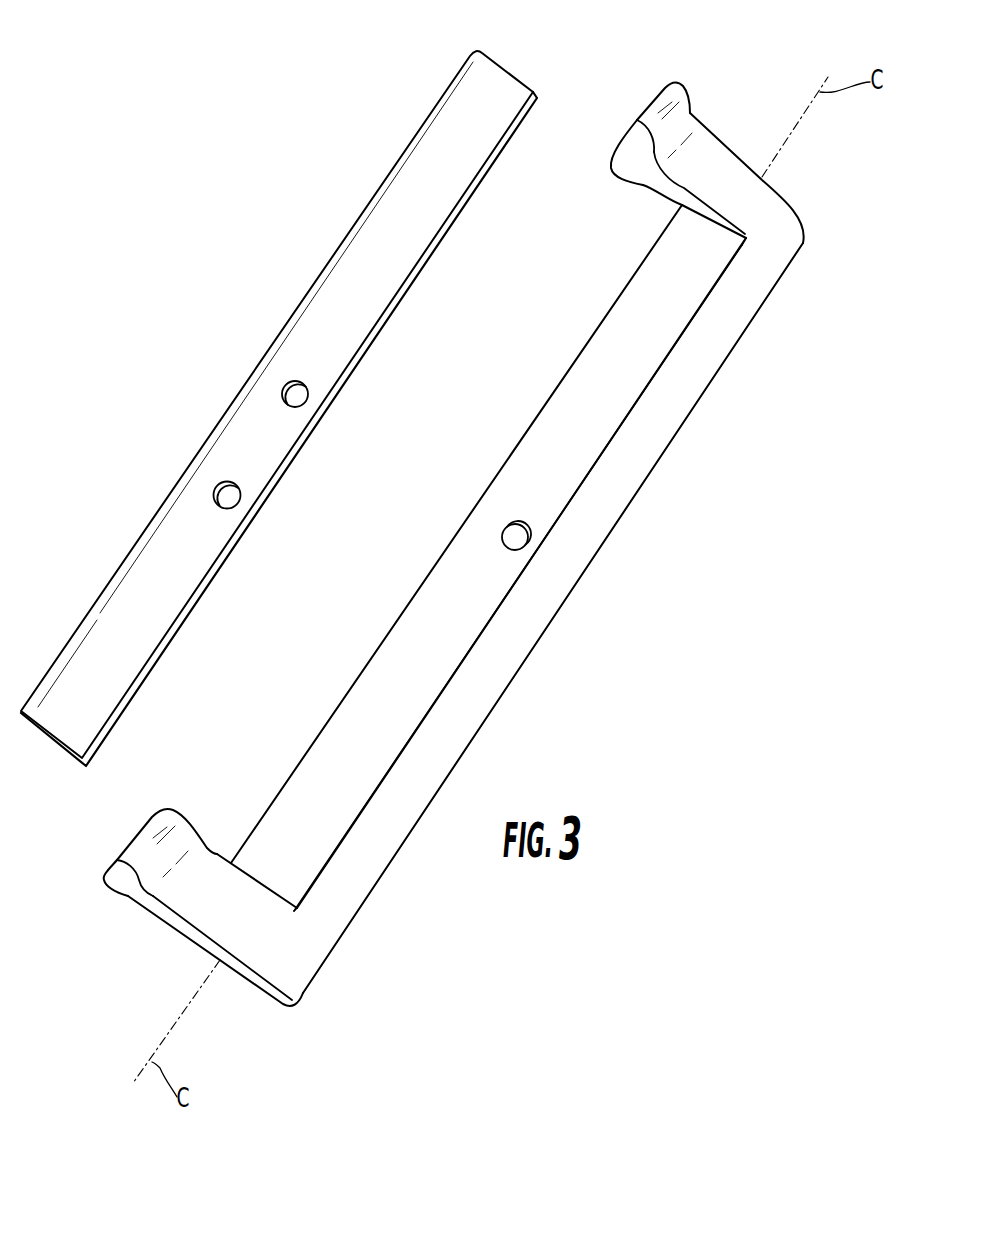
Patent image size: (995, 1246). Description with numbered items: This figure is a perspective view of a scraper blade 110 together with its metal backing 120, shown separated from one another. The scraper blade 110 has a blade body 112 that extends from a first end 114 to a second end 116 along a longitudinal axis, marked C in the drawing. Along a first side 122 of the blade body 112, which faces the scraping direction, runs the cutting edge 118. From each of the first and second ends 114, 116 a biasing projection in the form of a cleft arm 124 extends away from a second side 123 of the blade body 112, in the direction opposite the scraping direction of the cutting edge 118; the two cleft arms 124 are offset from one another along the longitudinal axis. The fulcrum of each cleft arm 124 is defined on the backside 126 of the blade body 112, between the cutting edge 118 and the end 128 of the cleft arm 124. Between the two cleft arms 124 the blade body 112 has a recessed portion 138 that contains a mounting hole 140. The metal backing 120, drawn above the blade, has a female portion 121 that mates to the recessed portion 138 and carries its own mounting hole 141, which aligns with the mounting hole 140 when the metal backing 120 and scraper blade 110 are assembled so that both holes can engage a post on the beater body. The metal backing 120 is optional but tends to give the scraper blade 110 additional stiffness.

The scraper blade 110 is at (708, 445).
The blade body 112 is at (480, 675).
The first end 114 is at (243, 972).
The second end 116 is at (763, 190).
The cutting edge 118 is at (597, 552).
The metal backing 120 is at (303, 332).
The female portion 121 is at (345, 401).
The first side 122 is at (722, 350).
The second side 123 is at (538, 407).
The cleft arm 124 is at (698, 152).
The backside 126 is at (657, 196).
The end of cleft arm 128 is at (623, 150).
The recessed portion 138 is at (603, 367).
The mounting hole 140 is at (513, 523).
The mounting hole 141 is at (281, 389).